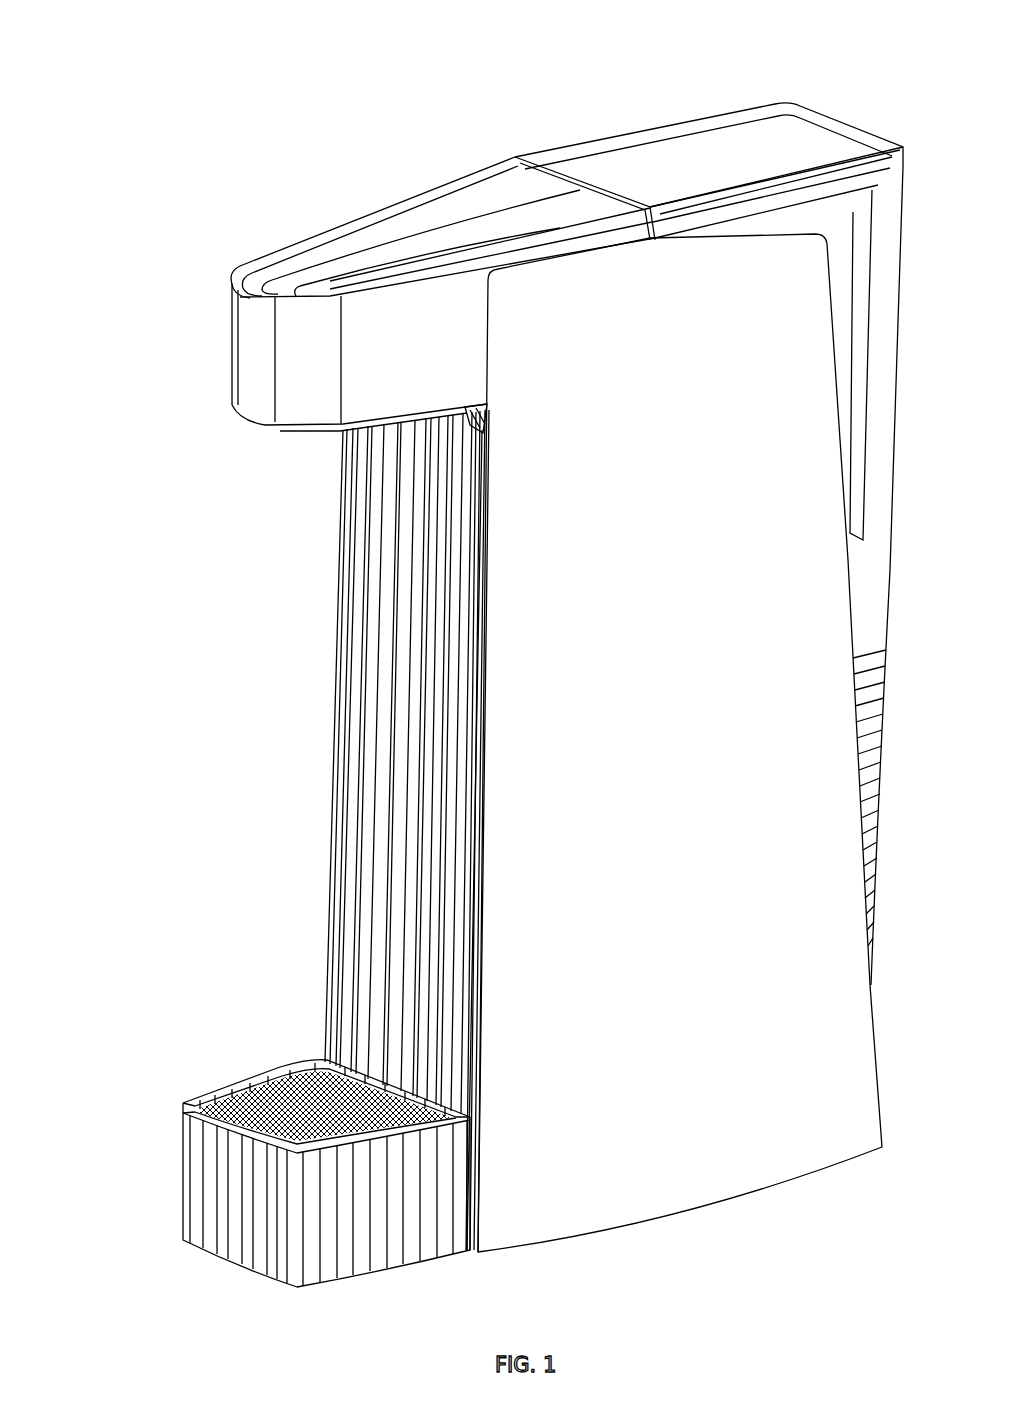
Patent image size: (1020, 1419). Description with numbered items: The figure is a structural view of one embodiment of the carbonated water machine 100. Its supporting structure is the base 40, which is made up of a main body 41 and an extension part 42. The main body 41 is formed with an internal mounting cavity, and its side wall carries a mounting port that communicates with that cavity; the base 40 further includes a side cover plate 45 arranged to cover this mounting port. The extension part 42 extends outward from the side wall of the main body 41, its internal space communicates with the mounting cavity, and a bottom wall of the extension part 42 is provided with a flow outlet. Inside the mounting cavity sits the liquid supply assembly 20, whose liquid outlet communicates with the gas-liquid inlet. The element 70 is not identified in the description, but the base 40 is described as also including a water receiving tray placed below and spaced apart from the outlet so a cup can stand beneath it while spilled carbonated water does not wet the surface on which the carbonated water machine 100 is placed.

The carbonated water machine 100 is at (472, 54).
The liquid supply assembly 20 is at (888, 150).
The base 40 is at (95, 516).
The main body 41 is at (545, 655).
The extension part 42 is at (262, 350).
The side cover plate 45 is at (390, 967).
The drip tray 70 is at (240, 1082).